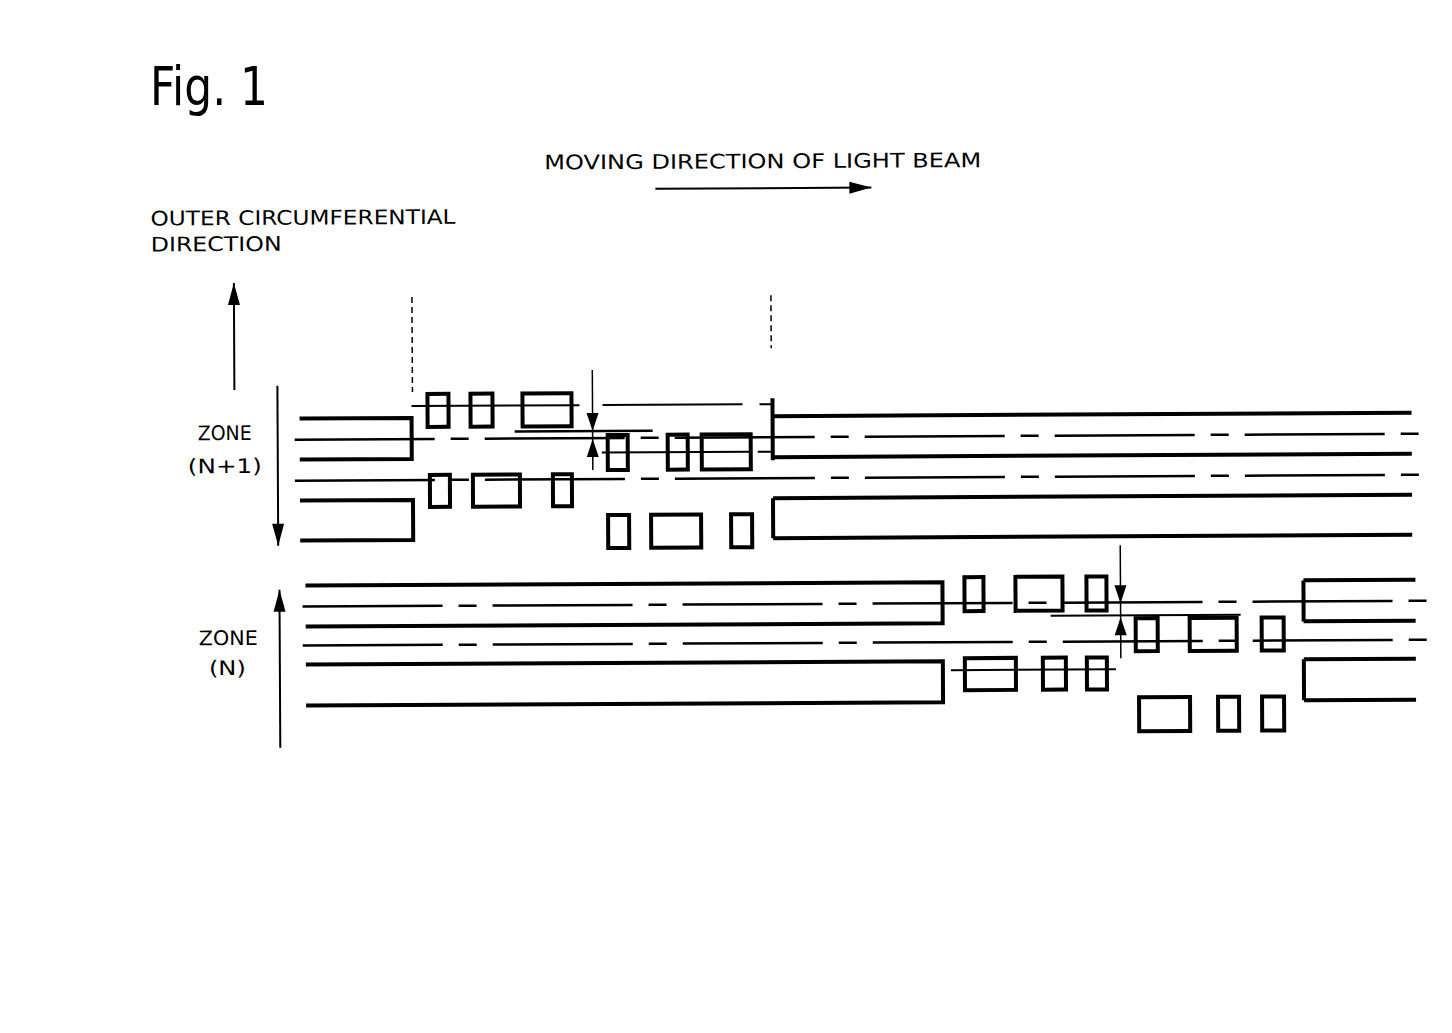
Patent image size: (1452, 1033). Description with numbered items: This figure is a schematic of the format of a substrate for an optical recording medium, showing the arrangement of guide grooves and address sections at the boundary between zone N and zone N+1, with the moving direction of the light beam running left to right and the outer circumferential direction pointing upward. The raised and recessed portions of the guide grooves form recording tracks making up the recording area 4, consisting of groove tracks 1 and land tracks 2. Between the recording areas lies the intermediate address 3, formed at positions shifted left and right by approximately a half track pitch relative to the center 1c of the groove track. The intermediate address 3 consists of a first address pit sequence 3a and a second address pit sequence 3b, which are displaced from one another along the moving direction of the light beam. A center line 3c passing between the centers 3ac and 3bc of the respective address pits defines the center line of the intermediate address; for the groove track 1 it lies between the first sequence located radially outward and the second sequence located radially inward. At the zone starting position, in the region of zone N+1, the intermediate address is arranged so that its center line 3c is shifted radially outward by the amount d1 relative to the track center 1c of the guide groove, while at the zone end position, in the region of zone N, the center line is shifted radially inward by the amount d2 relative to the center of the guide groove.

The groove track 1 is at (1092, 427).
The center of the groove track 1c is at (942, 438).
The land track 2 is at (1143, 468).
The intermediate address 3 is at (772, 305).
The first address pit sequence 3a is at (413, 339).
The second address pit sequence 3b is at (772, 339).
The center line of the intermediate address 3c is at (647, 425).
The center of the first address pit sequence 3ac is at (411, 403).
The center of the second address pit sequence 3bc is at (648, 452).
The recording area 4 is at (1410, 305).
The amount of shift in zone starting position d1 is at (594, 393).
The amount of shift in zone end position d2 is at (1120, 613).